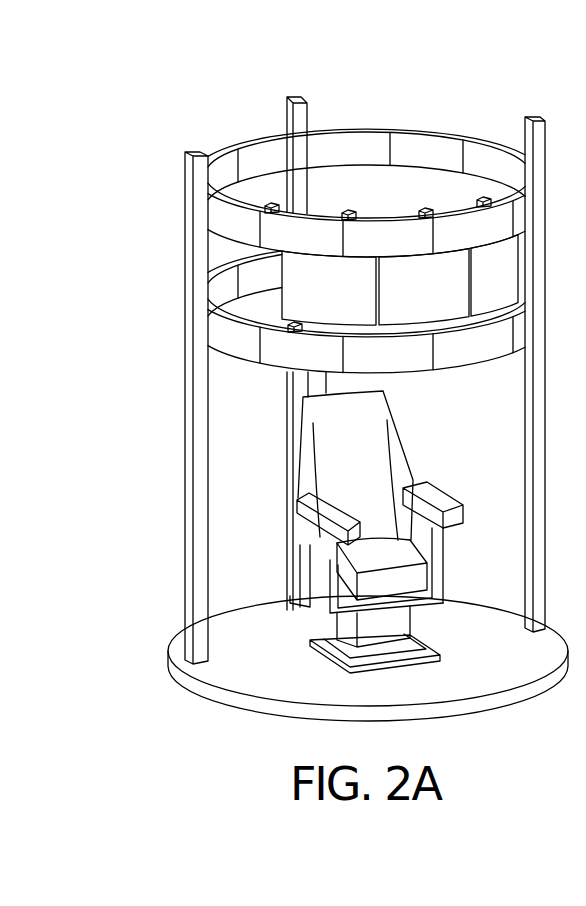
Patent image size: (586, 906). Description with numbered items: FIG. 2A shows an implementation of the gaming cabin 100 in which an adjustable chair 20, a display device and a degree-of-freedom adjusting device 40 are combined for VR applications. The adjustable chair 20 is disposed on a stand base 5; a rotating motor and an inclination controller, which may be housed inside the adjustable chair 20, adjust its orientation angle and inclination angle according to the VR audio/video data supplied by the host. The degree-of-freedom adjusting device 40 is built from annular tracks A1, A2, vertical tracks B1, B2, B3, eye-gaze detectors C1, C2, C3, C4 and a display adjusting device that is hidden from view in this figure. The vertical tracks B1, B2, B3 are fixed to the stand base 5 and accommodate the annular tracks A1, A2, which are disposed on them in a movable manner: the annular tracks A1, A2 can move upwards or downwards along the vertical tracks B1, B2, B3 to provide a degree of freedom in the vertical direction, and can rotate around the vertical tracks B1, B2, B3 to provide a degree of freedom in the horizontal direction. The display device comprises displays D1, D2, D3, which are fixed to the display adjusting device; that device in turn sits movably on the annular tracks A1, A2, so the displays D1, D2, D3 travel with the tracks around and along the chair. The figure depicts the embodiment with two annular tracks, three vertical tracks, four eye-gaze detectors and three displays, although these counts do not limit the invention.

The gaming cabin 100 is at (507, 75).
The stand base 5 is at (512, 693).
The degree-of-freedom adjusting device 40 is at (125, 275).
The adjustable chair 20 is at (433, 490).
The annular track A1 is at (240, 215).
The annular track A2 is at (236, 331).
The vertical track B1 is at (523, 130).
The vertical track B2 is at (290, 112).
The vertical track B3 is at (206, 187).
The eye-gaze detector C1 is at (486, 196).
The eye-gaze detector C2 is at (426, 205).
The eye-gaze detector C3 is at (350, 207).
The eye-gaze detector C4 is at (282, 198).
The display D1 is at (511, 282).
The display D2 is at (442, 302).
The display D3 is at (343, 303).